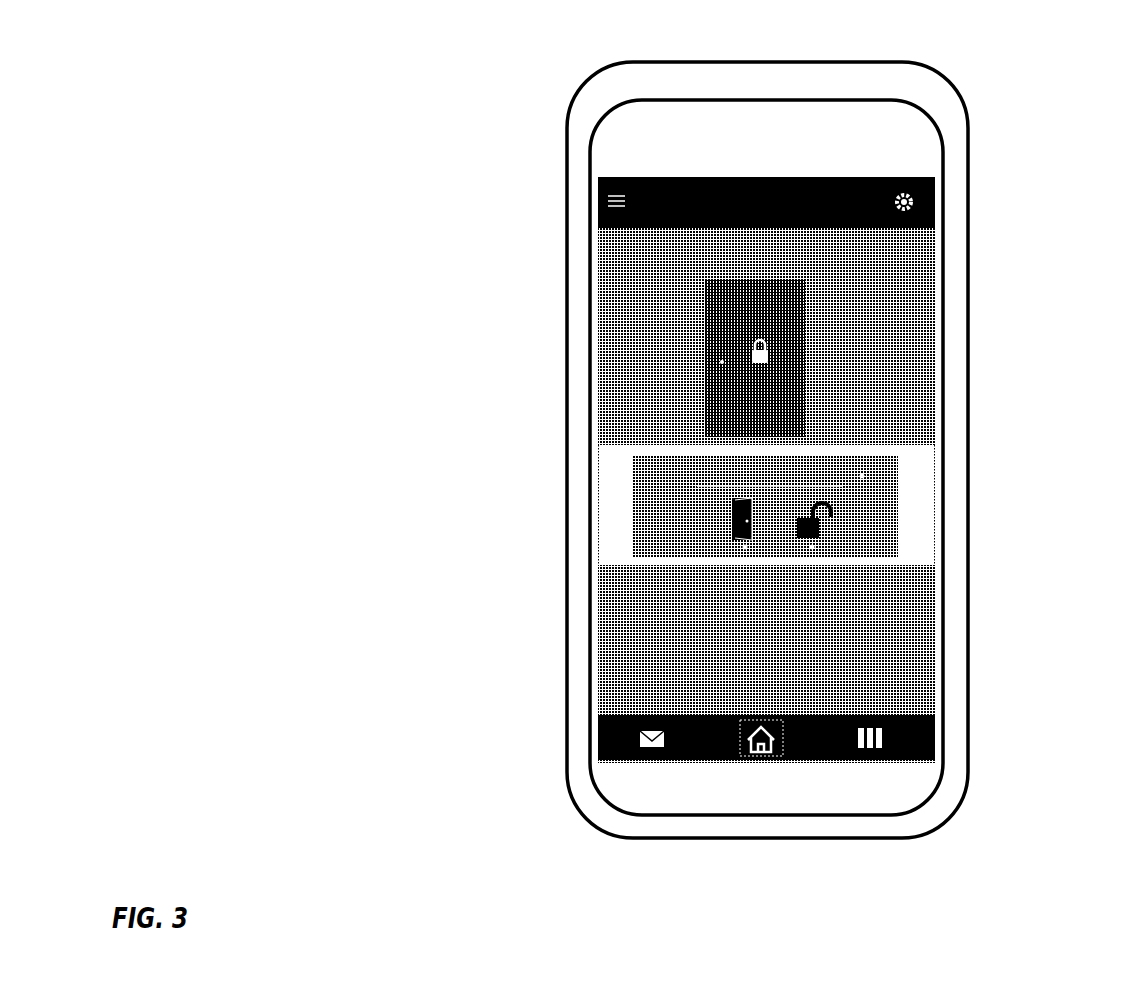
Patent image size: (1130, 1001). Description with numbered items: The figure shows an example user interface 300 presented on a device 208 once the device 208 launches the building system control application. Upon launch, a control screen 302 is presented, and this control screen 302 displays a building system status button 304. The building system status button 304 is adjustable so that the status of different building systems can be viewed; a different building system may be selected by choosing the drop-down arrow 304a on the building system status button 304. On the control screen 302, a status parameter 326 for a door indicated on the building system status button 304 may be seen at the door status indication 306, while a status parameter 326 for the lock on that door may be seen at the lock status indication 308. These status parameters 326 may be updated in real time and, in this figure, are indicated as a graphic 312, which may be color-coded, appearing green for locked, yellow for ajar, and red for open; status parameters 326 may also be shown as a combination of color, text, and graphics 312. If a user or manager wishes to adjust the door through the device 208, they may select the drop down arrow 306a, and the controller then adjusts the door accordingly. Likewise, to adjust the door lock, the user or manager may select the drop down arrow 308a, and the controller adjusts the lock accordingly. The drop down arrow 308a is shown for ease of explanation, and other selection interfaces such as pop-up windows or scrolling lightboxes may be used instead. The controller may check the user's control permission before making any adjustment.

The device 208 is at (913, 58).
The user interface 300 is at (605, 263).
The control screen 302 is at (905, 177).
The building system status button 304 is at (697, 458).
The drop-down arrow 304a is at (864, 470).
The door status indication 306 is at (707, 503).
The drop down arrow 306a is at (743, 547).
The lock status indication 308 is at (848, 523).
The drop down arrow 308a is at (812, 547).
The graphic 312 is at (787, 584).
The status parameter 326 is at (757, 604).